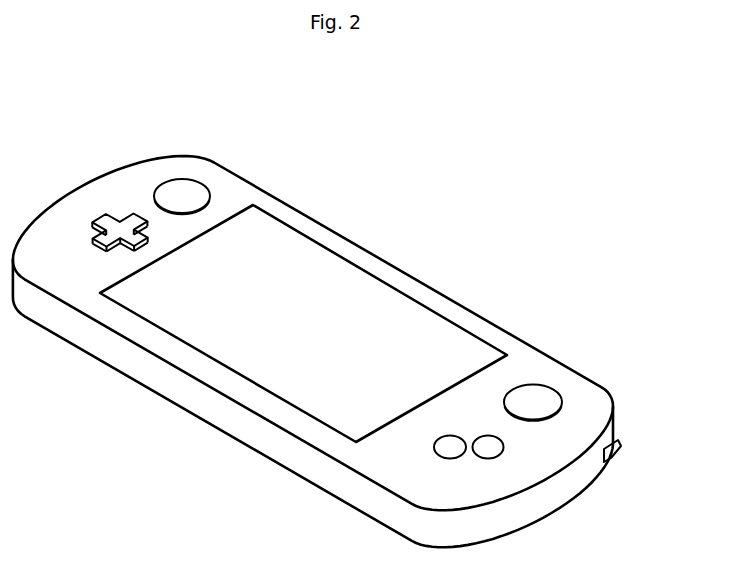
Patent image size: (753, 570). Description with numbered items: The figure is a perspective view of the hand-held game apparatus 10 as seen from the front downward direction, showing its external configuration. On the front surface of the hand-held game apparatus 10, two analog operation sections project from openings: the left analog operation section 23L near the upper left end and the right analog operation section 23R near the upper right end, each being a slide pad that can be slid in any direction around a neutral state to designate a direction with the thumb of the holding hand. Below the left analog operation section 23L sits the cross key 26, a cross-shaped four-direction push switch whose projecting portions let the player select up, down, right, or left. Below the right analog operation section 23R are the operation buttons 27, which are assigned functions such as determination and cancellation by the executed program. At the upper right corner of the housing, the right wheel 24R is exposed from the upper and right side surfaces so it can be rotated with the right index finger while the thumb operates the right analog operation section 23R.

The hand-held game apparatus 10 is at (365, 210).
The left analog operation section 23L is at (192, 195).
The right analog operation section 23R is at (537, 393).
The cross key 26 is at (134, 218).
The operation buttons 27 is at (509, 463).
The right wheel 24R is at (620, 447).